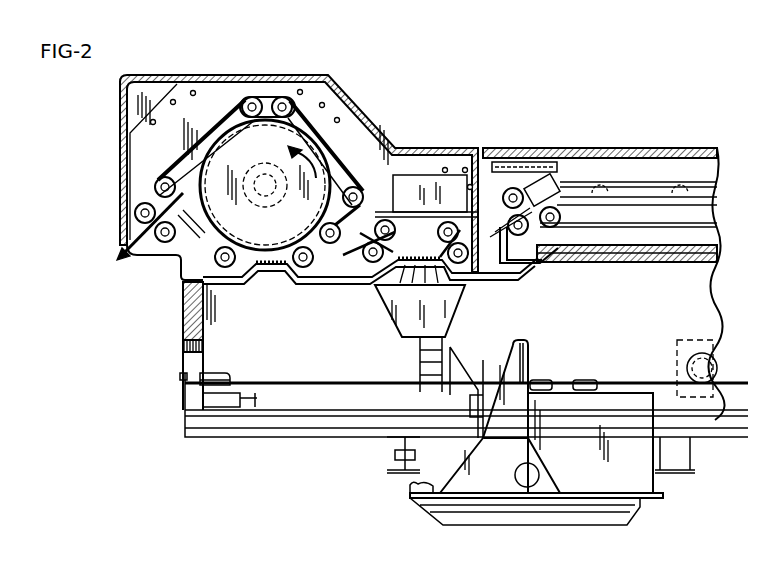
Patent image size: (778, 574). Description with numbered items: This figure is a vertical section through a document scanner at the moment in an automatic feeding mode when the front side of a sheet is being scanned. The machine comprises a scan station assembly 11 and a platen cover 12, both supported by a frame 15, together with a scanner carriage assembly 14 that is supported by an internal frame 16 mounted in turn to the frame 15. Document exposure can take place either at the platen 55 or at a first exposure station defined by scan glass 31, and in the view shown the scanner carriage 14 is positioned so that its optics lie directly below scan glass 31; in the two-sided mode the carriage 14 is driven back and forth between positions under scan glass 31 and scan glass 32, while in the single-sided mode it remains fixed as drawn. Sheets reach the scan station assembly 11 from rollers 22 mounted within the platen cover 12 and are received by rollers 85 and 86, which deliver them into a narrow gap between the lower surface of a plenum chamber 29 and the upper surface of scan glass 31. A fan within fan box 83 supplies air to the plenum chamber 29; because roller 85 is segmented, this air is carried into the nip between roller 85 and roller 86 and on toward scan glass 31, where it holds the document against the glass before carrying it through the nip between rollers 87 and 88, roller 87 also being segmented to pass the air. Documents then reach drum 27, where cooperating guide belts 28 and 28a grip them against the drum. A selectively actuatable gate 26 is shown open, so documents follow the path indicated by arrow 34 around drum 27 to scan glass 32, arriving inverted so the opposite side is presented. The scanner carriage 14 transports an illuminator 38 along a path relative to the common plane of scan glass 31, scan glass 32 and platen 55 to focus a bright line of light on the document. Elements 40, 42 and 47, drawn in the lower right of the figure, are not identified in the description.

The scan station assembly 11 is at (370, 88).
The platen cover 12 is at (601, 128).
The scanner carriage assembly 14 is at (412, 503).
The frame 15 is at (188, 305).
The internal frame 16 is at (272, 447).
The rollers 22 is at (527, 173).
The movable gate 26 is at (180, 170).
The drum 27 is at (317, 193).
The guide belt 28 is at (215, 123).
The guide belt 28a is at (307, 112).
The plenum chamber 29 is at (412, 200).
The scan glass 31 is at (407, 255).
The scan glass 32 is at (263, 263).
The arrow 34 is at (200, 195).
The illuminator 38 is at (392, 313).
The housing box 40 is at (653, 438).
The rail bracket 42 is at (393, 453).
The pivot 47 is at (653, 377).
The platen 55 is at (625, 263).
The fan box 83 is at (417, 172).
The roller 85 is at (450, 217).
The roller 86 is at (448, 265).
The roller 87 is at (333, 267).
The roller 88 is at (357, 262).